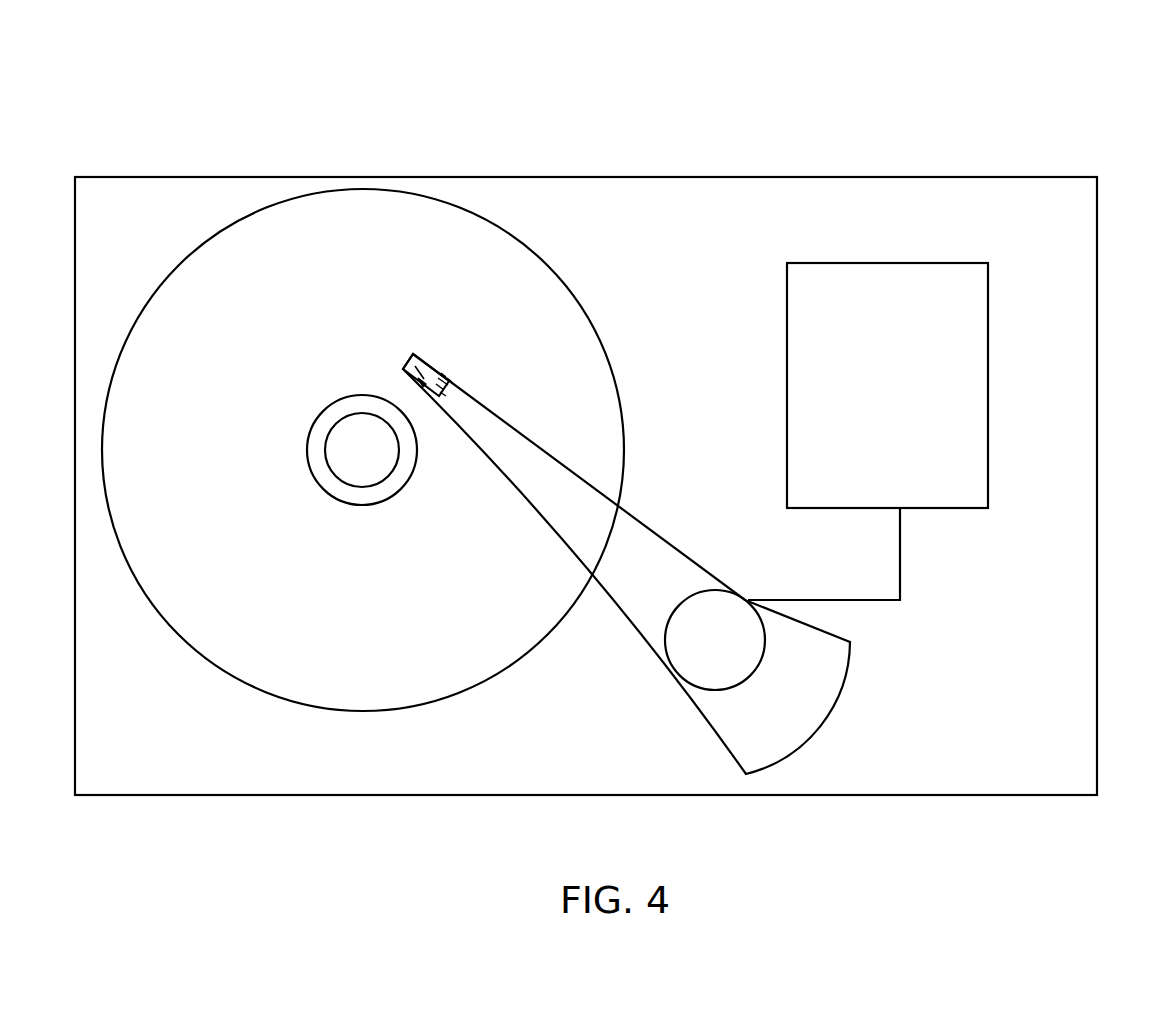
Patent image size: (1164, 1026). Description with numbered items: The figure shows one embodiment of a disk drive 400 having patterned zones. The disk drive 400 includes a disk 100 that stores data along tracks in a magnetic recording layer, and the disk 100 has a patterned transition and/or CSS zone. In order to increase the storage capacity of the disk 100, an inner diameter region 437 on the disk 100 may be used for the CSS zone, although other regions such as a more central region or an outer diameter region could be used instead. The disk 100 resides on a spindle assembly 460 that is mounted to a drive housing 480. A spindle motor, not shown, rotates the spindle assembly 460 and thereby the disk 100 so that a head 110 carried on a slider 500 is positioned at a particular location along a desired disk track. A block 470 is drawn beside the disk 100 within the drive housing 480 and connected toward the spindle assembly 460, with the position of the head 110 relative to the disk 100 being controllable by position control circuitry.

The disk drive 400 is at (1070, 86).
The drive housing 480 is at (733, 177).
The disk 100 is at (228, 678).
The inner diameter (ID) region 437 is at (337, 414).
The spindle assembly 460 is at (380, 463).
The slider 500 is at (421, 368).
The head 110 is at (446, 379).
The controller 470 is at (895, 446).